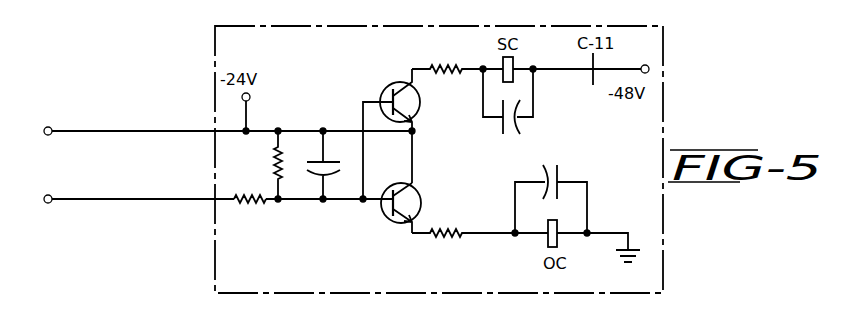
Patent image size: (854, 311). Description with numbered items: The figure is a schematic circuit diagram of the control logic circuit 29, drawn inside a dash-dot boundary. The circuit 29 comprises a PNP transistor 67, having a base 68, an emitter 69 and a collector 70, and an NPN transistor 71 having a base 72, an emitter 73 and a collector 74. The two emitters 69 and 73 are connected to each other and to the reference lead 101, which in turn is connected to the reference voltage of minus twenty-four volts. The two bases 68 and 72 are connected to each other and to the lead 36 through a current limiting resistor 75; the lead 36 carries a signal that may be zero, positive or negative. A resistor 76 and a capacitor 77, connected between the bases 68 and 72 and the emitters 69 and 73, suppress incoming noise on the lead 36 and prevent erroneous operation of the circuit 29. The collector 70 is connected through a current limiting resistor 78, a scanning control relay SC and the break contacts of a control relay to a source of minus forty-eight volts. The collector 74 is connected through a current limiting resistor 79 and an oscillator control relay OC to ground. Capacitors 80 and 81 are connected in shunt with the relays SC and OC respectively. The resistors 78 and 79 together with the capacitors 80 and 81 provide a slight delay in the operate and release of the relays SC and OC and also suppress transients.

The control logic circuit 29 is at (215, 62).
The lead 36 is at (40, 209).
The reference lead 101 is at (213, 121).
The PNP transistor 67 is at (420, 97).
The base 68 is at (383, 96).
The emitter 69 is at (418, 113).
The collector 70 is at (399, 94).
The NPN transistor 71 is at (401, 205).
The base 72 is at (384, 210).
The emitter 73 is at (404, 186).
The collector 74 is at (406, 222).
The current limiting resistor 75 is at (242, 205).
The resistor 76 is at (276, 163).
The capacitor 77 is at (326, 164).
The current limiting resistor 78 is at (434, 64).
The current limiting resistor 79 is at (440, 246).
The capacitor 80 is at (520, 128).
The capacitor 81 is at (557, 173).